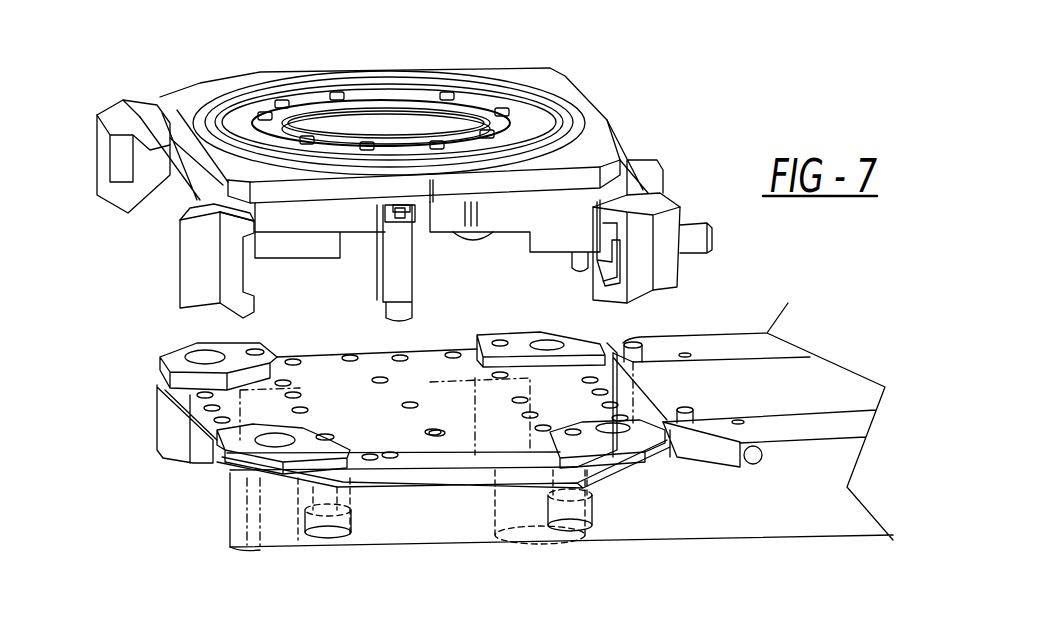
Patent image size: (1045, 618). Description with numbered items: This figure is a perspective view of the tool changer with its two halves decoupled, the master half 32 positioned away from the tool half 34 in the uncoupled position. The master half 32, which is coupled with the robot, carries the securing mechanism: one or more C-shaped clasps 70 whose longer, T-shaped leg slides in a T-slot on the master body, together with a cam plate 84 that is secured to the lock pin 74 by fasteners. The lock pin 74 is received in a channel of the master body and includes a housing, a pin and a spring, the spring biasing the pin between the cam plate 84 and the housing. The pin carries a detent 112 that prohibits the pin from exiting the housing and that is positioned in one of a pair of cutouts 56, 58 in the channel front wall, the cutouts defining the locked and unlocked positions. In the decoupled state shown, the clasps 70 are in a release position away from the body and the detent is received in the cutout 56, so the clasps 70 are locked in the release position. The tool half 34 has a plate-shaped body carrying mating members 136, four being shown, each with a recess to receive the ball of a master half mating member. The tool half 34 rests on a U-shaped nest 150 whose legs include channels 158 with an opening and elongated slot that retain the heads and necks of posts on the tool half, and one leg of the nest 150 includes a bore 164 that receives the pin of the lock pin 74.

The master half 32 is at (185, 52).
The detent 112 is at (400, 213).
The cam plate 84 is at (600, 157).
The clasp 70 is at (78, 184).
The cutout 56 is at (392, 224).
The lock pin 74 is at (408, 274).
The cutout 58 is at (435, 204).
The mating member 136 is at (173, 340).
The tool half 34 is at (163, 472).
The nest 150 is at (739, 551).
The bore 164 is at (408, 480).
The channel 158 is at (507, 528).